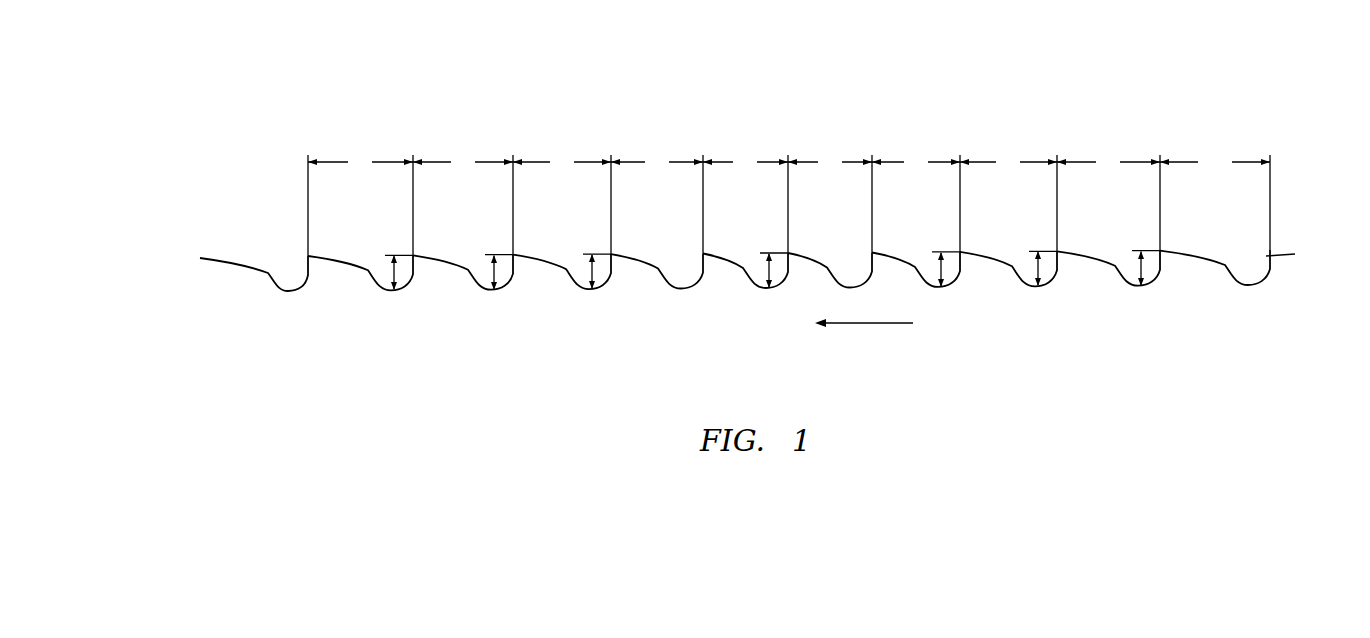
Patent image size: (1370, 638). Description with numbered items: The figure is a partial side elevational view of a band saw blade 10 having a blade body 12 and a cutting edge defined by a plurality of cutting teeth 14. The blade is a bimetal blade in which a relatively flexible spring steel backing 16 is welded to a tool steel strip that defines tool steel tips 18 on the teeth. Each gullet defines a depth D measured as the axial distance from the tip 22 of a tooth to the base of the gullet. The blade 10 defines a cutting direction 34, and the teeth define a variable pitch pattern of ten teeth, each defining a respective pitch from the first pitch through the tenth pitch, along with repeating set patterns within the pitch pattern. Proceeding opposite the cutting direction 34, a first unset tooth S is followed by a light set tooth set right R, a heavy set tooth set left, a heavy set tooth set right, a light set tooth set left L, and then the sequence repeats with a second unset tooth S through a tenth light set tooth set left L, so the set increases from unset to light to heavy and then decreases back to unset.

The band saw blade 10 is at (752, 185).
The blade body 12 is at (990, 305).
The cutting teeth 14 is at (331, 252).
The spring steel backing 16 is at (1170, 307).
The tool steel tips 18 is at (617, 257).
The tip 22 is at (510, 254).
The cutting direction 34 is at (877, 323).